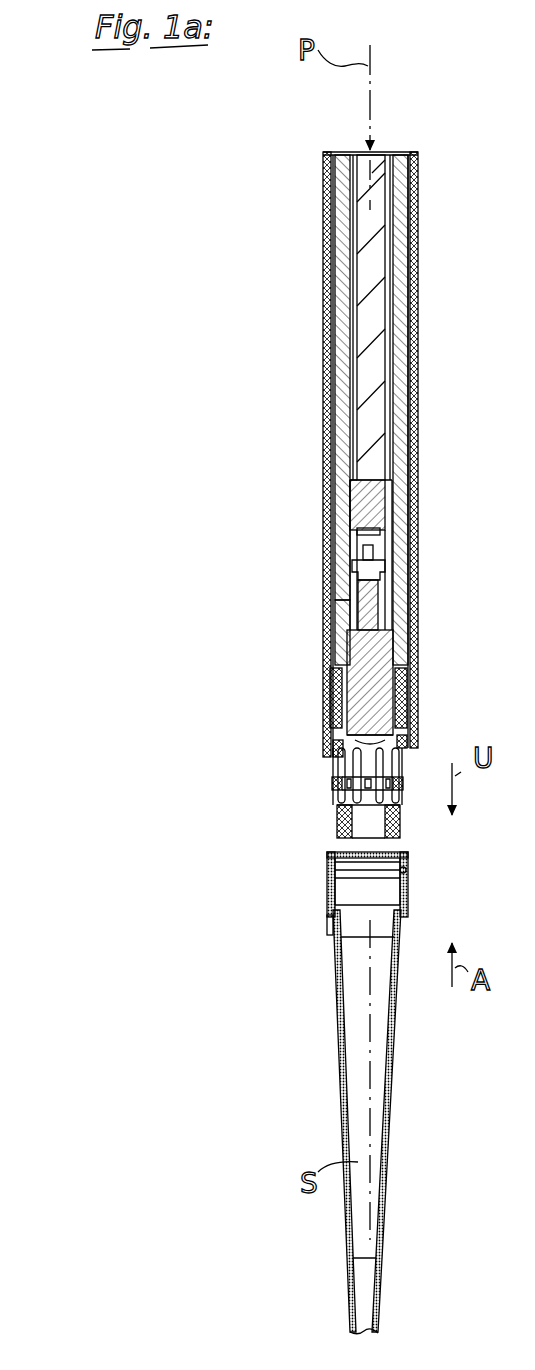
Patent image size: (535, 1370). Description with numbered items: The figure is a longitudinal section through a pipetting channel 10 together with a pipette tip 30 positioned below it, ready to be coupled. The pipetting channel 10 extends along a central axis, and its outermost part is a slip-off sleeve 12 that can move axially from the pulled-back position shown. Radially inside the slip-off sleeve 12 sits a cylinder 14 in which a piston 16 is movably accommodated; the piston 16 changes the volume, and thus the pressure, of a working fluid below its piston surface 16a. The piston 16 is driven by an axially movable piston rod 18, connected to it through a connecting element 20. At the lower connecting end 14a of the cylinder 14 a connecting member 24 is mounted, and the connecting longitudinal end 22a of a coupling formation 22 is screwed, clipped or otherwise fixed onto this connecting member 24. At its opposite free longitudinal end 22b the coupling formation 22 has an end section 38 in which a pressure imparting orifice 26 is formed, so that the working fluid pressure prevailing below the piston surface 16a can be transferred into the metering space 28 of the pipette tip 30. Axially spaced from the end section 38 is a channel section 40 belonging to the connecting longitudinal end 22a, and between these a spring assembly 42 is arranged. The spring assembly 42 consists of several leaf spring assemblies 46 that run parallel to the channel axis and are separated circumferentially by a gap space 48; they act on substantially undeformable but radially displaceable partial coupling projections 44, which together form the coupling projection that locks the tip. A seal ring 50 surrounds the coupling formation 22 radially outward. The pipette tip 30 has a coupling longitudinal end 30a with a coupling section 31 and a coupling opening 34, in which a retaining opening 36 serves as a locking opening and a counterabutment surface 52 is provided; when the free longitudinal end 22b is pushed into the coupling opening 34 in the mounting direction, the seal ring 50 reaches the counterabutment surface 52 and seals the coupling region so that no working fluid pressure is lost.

The pipetting channel 10 is at (296, 230).
The slip-off sleeve 12 is at (415, 418).
The cylinder 14 is at (402, 323).
The connecting end 14a is at (318, 620).
The piston 16 is at (405, 650).
The piston surface 16a is at (407, 742).
The piston rod 18 is at (372, 213).
The connecting element 20 is at (388, 545).
The coupling formation 22 is at (303, 815).
The connecting longitudinal end 22a is at (322, 700).
The free longitudinal end 22b is at (323, 838).
The connecting member 24 is at (402, 606).
The pressure imparting orifice 26 is at (368, 832).
The metering space 28 is at (377, 1078).
The pipette tip 30 is at (400, 1018).
The coupling longitudinal end 30a is at (300, 893).
The coupling section 31 is at (460, 840).
The coupling opening 34 is at (375, 905).
The retaining opening 36 is at (327, 878).
The end section 38 is at (397, 826).
The channel section 40 is at (405, 710).
The spring assembly 42 is at (302, 797).
The partial coupling projections 44 is at (334, 782).
The leaf spring assemblies 46 is at (405, 763).
The gap space 48 is at (323, 737).
The seal ring 50 is at (330, 763).
The counterabutment surface 52 is at (404, 890).